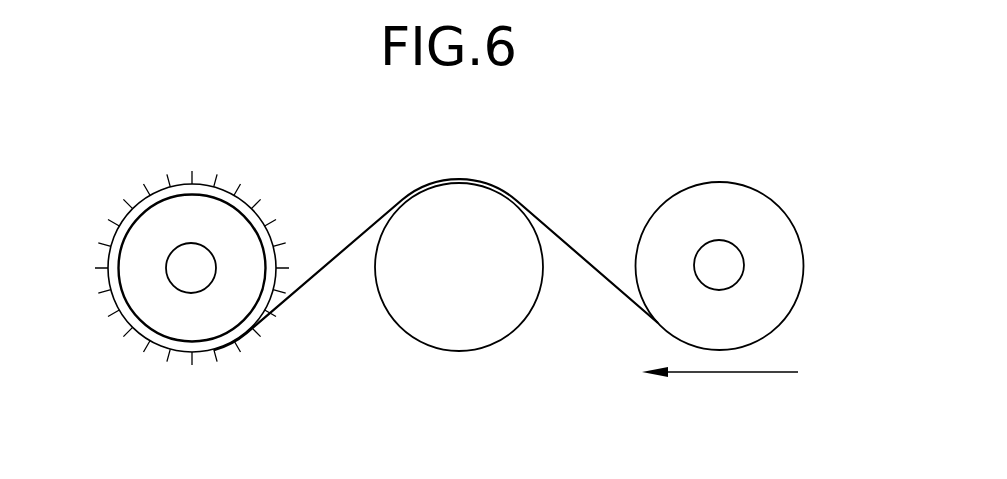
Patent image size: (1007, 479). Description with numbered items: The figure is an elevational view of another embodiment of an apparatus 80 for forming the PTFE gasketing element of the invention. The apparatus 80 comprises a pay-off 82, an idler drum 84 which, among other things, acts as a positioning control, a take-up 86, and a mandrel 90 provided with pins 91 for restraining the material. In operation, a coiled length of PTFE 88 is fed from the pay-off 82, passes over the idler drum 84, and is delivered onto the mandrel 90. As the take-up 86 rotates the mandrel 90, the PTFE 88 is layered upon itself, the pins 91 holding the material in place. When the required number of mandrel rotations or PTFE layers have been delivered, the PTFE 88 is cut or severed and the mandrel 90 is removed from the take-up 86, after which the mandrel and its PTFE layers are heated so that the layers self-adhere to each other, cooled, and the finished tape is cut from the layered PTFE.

The apparatus 80 is at (688, 126).
The pay-off 82 is at (732, 258).
The idler drum 84 is at (443, 322).
The take-up 86 is at (178, 258).
The PTFE 88 is at (780, 297).
The mandrel 90 is at (160, 347).
The pins 91 is at (277, 203).